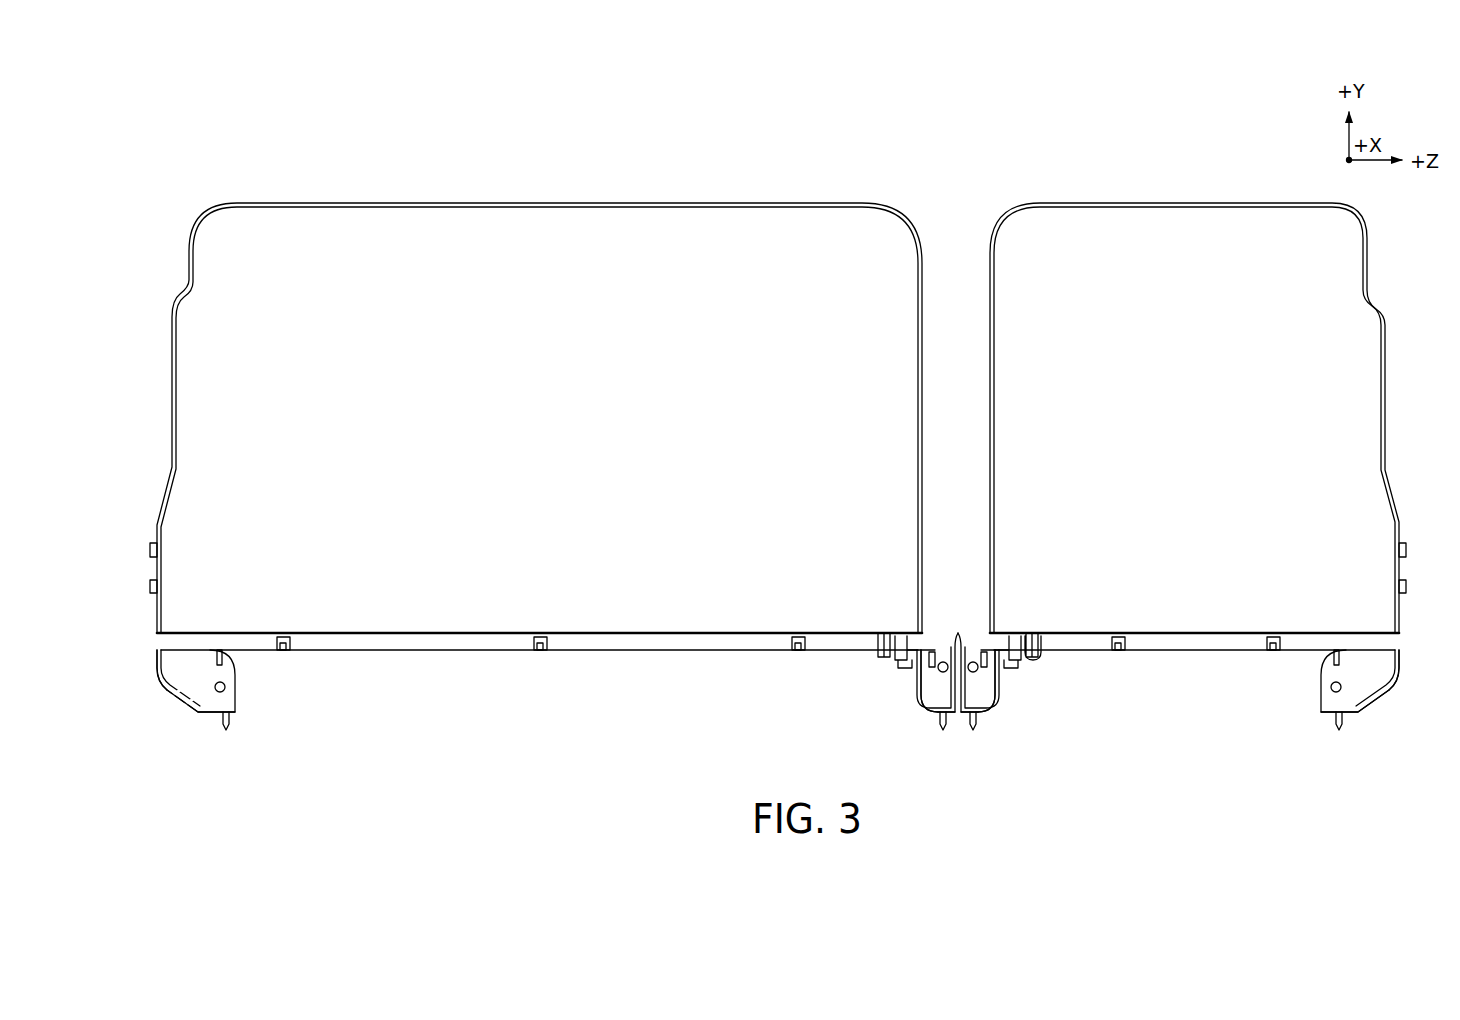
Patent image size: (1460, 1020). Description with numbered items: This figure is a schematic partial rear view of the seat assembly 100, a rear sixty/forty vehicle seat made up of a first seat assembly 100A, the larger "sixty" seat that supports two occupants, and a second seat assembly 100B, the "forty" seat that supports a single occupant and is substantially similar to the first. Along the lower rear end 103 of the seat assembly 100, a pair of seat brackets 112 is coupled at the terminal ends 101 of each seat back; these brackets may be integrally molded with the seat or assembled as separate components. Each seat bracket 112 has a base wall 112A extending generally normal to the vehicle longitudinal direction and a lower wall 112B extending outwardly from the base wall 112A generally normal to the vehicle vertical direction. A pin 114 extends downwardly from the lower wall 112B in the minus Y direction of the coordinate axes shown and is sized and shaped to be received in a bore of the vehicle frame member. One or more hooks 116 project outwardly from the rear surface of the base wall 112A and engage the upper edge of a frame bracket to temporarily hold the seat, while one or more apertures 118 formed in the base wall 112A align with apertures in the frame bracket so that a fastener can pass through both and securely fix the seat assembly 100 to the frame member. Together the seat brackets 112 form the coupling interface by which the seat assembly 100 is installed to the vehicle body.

The seat assembly 100 is at (347, 168).
The first seat assembly 100A is at (720, 216).
The second seat assembly 100B is at (1235, 218).
The terminal ends 101 is at (165, 710).
The lower rear end 103 is at (484, 633).
The seat bracket 112 is at (158, 688).
The base wall 112A is at (175, 660).
The lower wall 112B is at (208, 714).
The pin 114 is at (228, 731).
The hook 116 is at (219, 650).
The aperture 118 is at (226, 690).